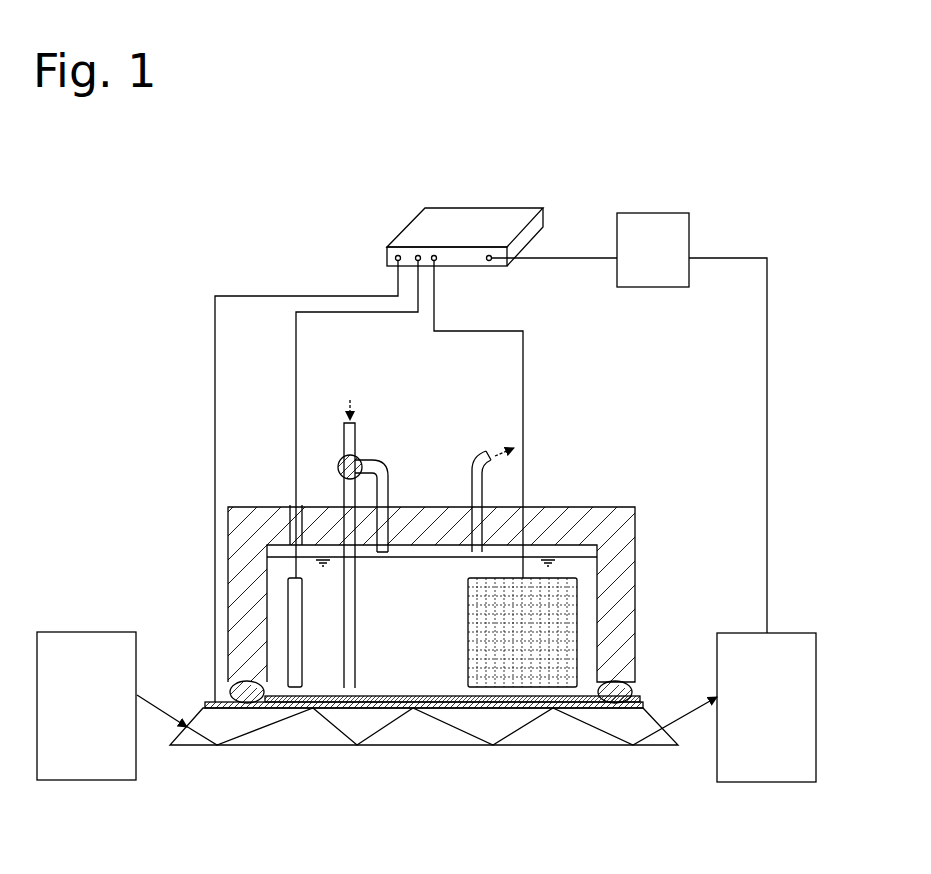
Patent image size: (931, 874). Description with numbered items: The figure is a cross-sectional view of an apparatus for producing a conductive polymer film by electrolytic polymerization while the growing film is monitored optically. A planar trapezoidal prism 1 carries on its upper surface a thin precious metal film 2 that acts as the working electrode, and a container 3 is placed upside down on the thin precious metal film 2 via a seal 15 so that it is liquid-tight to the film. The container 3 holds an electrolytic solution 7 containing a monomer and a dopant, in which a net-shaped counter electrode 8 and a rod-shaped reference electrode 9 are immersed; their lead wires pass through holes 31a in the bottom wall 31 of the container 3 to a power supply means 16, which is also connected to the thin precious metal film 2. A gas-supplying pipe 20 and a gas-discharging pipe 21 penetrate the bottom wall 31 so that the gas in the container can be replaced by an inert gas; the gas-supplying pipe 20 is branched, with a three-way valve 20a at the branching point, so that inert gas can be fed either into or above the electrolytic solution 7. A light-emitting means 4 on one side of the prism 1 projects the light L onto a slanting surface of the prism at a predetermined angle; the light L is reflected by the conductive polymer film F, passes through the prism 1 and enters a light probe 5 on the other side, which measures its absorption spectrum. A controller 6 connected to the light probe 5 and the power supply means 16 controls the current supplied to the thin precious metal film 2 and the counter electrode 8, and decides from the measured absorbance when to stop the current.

The planar trapezoidal prism 1 is at (424, 754).
The thin precious metal film 2 is at (310, 715).
The container 3 is at (428, 571).
The light-emitting means 4 is at (88, 640).
The light probe 5 is at (790, 640).
The controller 6 is at (655, 218).
The electrolytic solution 7 is at (575, 565).
The net-shaped counter electrode 8 is at (468, 596).
The rod-shaped reference electrode 9 is at (302, 597).
The seal 15 is at (634, 688).
The power supply means 16 is at (470, 212).
The gas-supplying pipe 20 is at (357, 440).
The three-way valve 20a is at (341, 460).
The gas-discharging pipe 21 is at (471, 480).
The bottom wall 31 is at (616, 507).
The holes 31a is at (292, 505).
The conductive polymer film F is at (400, 700).
The light L is at (156, 700).